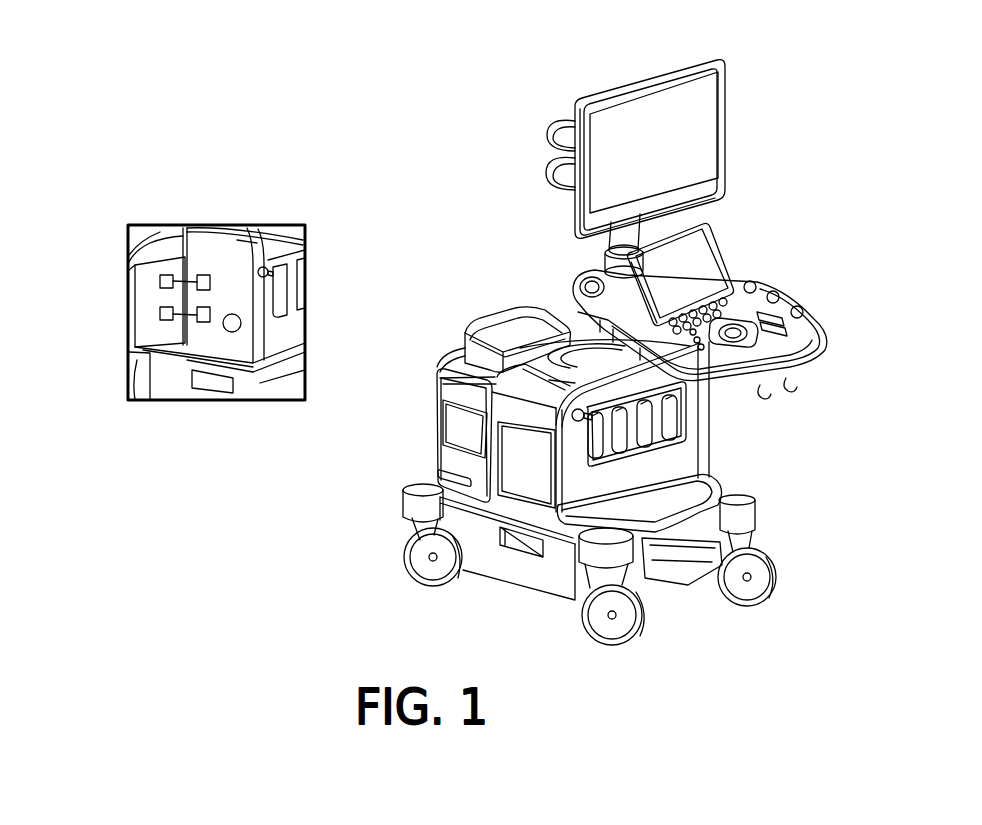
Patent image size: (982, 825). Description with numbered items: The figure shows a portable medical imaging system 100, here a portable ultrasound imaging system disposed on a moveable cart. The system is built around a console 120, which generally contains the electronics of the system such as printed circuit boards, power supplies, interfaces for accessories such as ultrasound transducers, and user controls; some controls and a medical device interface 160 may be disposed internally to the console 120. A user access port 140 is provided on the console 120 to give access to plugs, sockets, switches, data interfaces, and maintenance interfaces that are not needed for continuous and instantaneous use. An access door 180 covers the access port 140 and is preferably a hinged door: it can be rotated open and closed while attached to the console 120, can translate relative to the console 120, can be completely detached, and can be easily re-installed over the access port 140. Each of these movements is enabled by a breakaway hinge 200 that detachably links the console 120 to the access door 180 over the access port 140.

The portable medical imaging system 100 is at (128, 85).
The console 120 is at (553, 365).
The user access port 140 is at (527, 420).
The medical device interface 160 is at (233, 332).
The access door 180 is at (527, 483).
The breakaway hinge 200 is at (160, 312).